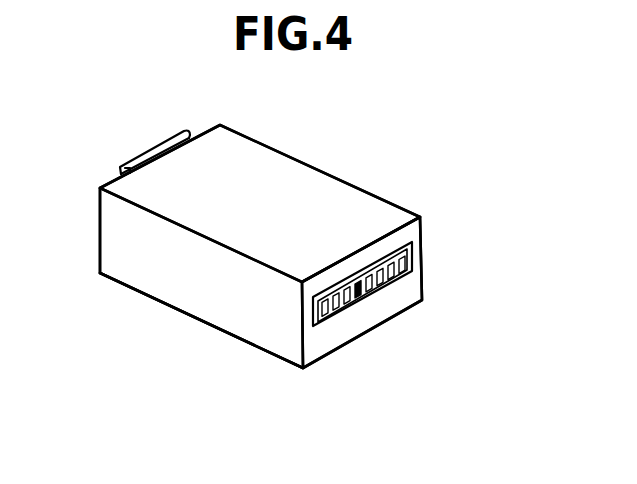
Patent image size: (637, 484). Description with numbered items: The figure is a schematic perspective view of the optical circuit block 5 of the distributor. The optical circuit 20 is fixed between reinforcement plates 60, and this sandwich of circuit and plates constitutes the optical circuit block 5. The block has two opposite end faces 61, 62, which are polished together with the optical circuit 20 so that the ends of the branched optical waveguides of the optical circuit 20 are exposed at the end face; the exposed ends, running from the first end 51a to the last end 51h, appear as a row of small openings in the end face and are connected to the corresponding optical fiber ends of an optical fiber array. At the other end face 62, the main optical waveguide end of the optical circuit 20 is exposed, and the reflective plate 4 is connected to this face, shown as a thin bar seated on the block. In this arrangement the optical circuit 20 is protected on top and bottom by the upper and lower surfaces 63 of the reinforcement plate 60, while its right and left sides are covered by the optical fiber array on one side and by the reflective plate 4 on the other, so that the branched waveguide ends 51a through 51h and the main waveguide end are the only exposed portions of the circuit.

The reflective plate 4 is at (160, 142).
The optical circuit block 5 is at (352, 175).
The optical circuit 20 is at (372, 295).
The end of branched optical waveguide 51a is at (323, 317).
The end of branched optical waveguide 51h is at (410, 258).
The reinforcement plate 60 is at (202, 305).
The end face 61 is at (408, 237).
The end face 62 is at (103, 182).
The upper and lower surface 63 is at (237, 180).